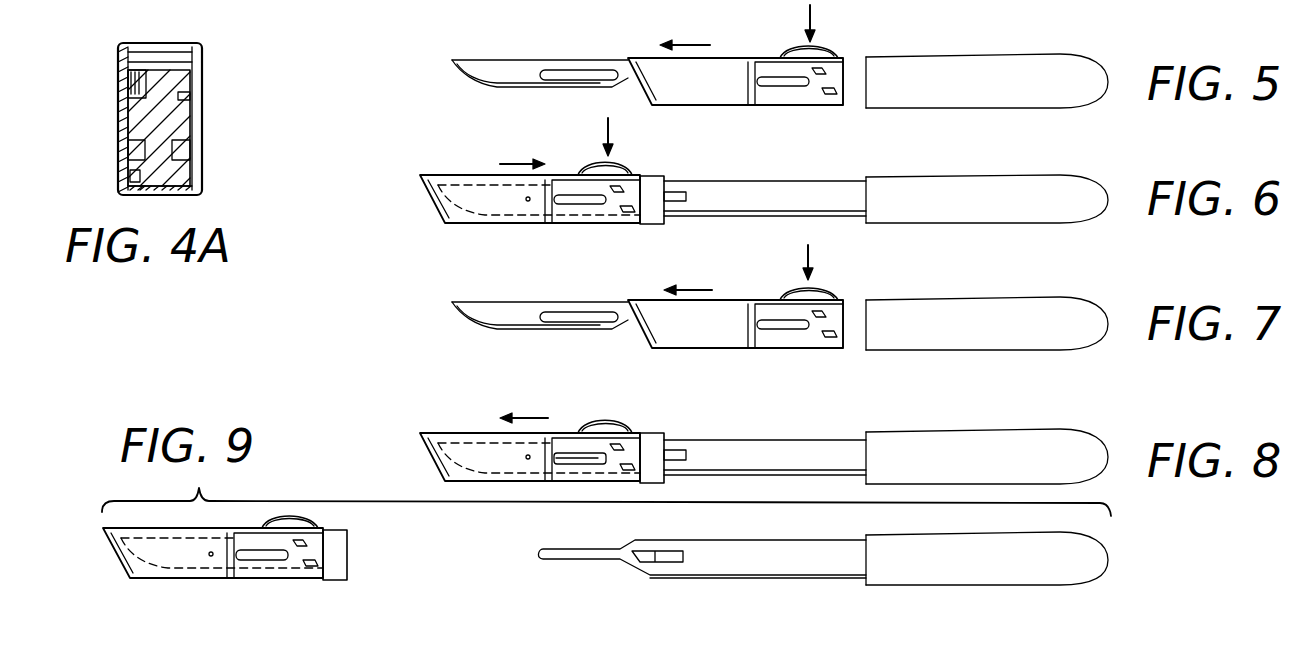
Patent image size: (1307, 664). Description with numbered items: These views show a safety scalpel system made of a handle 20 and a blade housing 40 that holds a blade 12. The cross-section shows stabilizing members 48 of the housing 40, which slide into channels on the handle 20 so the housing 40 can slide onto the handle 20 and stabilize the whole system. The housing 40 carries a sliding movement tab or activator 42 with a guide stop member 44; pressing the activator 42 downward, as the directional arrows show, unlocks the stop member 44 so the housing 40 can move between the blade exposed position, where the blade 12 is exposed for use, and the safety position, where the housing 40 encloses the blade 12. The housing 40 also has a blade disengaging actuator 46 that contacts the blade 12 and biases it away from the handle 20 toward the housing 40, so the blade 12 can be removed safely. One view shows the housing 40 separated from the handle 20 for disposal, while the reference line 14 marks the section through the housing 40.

In FIG. 5, the blade 12 is at (472, 62).
In FIG. 6, the blade 12 is at (470, 186).
In FIG. 7, the blade 12 is at (540, 315).
In FIG. 8, the blade 12 is at (470, 444).
In FIG. 9, the blade 12 is at (222, 553).
In FIG. 5, the blade mounting tang 14 is at (571, 6).
In FIG. 5, the handle 20 is at (888, 48).
In FIG. 6, the handle 20 is at (886, 199).
In FIG. 7, the handle 20 is at (975, 323).
In FIG. 8, the handle 20 is at (860, 427).
In FIG. 9, the handle 20 is at (940, 592).
In FIG. 4A, the housing 40 is at (212, 57).
In FIG. 5, the housing 40 is at (730, 58).
In FIG. 6, the housing 40 is at (578, 162).
In FIG. 7, the housing 40 is at (756, 276).
In FIG. 8, the housing 40 is at (538, 405).
In FIG. 9, the housing 40 is at (237, 585).
In FIG. 5, the activator 42 is at (818, 48).
In FIG. 6, the activator 42 is at (620, 170).
In FIG. 7, the activator 42 is at (818, 292).
In FIG. 8, the activator 42 is at (612, 430).
In FIG. 9, the activator 42 is at (290, 522).
In FIG. 6, the guide stop member 44 is at (645, 178).
In FIG. 7, the guide stop member 44 is at (845, 300).
In FIG. 8, the guide stop member 44 is at (641, 433).
In FIG. 9, the guide stop member 44 is at (335, 555).
In FIG. 8, the blade disengaging actuator 46 is at (581, 455).
In FIG. 4A, the stabilizing members 48 is at (190, 98).